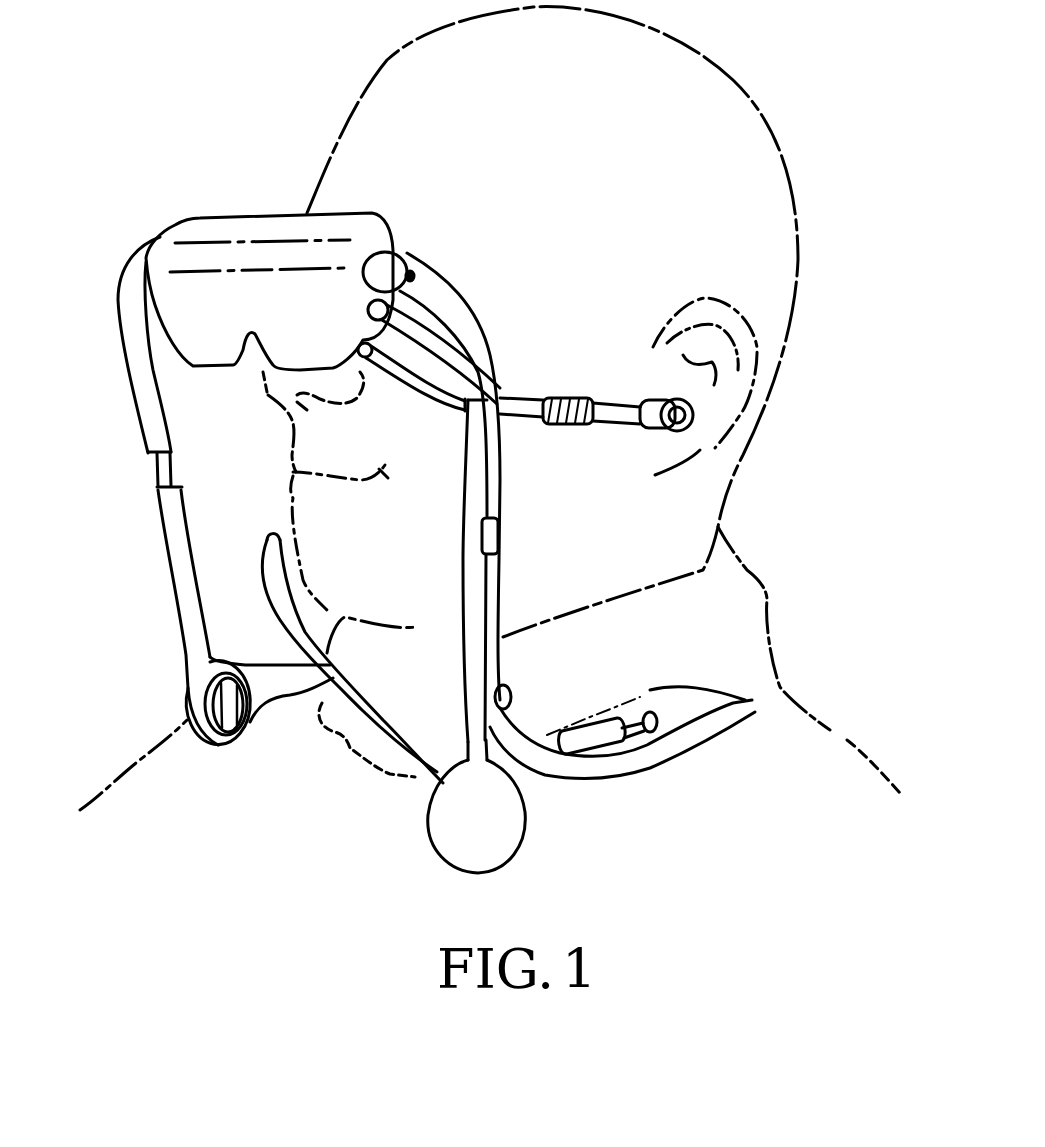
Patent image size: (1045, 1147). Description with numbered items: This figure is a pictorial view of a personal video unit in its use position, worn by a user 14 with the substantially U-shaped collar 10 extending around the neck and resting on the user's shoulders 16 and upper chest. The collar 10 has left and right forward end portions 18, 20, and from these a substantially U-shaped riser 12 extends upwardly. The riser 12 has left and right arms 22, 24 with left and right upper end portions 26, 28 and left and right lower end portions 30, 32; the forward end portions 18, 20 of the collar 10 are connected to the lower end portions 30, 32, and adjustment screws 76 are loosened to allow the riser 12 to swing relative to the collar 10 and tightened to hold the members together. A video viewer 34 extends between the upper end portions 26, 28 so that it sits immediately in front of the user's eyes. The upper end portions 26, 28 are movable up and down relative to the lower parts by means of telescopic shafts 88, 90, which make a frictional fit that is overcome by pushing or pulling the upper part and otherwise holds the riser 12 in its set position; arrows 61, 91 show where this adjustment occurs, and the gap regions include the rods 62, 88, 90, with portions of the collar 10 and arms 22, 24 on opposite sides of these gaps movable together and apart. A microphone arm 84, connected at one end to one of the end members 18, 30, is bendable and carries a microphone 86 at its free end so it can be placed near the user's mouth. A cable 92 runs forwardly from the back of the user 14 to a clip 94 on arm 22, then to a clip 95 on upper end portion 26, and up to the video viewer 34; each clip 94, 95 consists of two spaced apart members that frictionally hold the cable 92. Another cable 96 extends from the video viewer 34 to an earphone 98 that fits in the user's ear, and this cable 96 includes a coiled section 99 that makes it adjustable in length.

The collar 10 is at (606, 805).
The riser 12 is at (151, 618).
The user 14 is at (326, 80).
The shoulders 16 is at (833, 760).
The left forward end portion 18 is at (427, 802).
The right forward end portion 20 is at (213, 746).
The left arm 22 is at (467, 657).
The right arm 24 is at (160, 513).
The left upper end portion 26 is at (472, 300).
The right upper end portion 28 is at (130, 277).
The left lower end portion 30 is at (503, 827).
The right lower end portion 32 is at (197, 655).
The video viewer 34 is at (287, 262).
The arrow 61 is at (590, 704).
The rod 62 is at (635, 735).
The adjustment screw 76 is at (247, 710).
The microphone arm 84 is at (365, 722).
The microphone 86 is at (271, 651).
The telescopic shaft 88 is at (483, 540).
The telescopic shaft 90 is at (157, 465).
The arrow 91 is at (191, 446).
The cable 92 is at (713, 740).
The clip 94 is at (511, 692).
The clip 95 is at (507, 437).
The cable 96 is at (435, 402).
The earphone 98 is at (673, 420).
The coiled section 99 is at (577, 398).